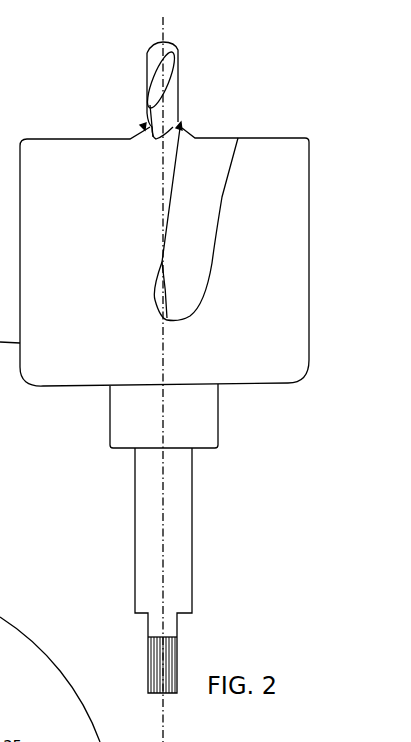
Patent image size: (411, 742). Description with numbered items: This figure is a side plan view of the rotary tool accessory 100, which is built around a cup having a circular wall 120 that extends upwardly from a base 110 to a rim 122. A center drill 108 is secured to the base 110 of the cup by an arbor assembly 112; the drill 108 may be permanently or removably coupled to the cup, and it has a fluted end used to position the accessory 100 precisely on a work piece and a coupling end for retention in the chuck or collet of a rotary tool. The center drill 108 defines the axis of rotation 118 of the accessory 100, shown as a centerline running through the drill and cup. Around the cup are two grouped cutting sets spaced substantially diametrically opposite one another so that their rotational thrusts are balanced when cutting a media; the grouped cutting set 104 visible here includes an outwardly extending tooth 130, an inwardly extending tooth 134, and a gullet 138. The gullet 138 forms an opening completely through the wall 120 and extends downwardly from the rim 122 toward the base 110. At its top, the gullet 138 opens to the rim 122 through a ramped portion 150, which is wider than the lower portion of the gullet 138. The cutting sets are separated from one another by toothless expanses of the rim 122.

The rotary tool accessory 100 is at (282, 59).
The grouped cutting set 104 is at (133, 201).
The center drill 108 is at (178, 88).
The base 110 is at (248, 383).
The arbor assembly 112 is at (110, 430).
The axis of rotation 118 is at (165, 478).
The circular wall 120 is at (308, 282).
The rim 122 is at (77, 137).
The outwardly extending tooth 130 is at (183, 127).
The inwardly extending tooth 134 is at (137, 128).
The gullet 138 is at (212, 245).
The ramped portion 150 is at (233, 160).